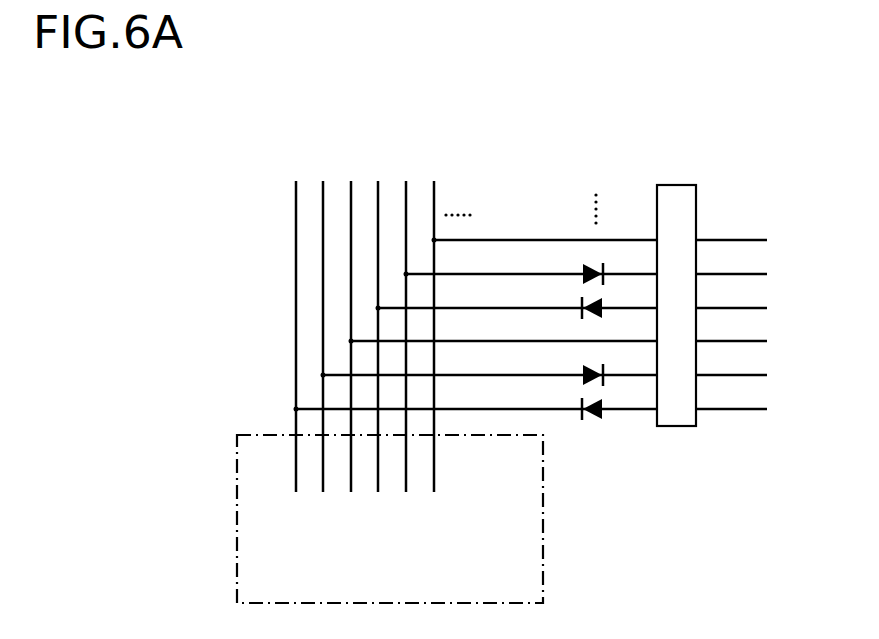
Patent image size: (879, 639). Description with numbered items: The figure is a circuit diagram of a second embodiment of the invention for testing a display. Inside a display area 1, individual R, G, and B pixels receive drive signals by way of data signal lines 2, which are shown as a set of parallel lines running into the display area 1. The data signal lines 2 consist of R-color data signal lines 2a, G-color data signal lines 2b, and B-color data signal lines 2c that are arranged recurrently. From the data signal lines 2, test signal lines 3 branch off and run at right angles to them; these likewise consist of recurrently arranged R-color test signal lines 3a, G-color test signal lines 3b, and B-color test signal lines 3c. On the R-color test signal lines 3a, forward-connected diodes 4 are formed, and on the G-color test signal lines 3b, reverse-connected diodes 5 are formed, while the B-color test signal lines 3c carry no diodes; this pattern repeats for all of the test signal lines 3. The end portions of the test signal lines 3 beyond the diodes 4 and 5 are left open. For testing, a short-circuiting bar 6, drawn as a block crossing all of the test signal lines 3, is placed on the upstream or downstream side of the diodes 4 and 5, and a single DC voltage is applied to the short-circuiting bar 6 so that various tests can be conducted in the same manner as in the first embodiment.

The display area 1 is at (245, 545).
The data signal lines 2 is at (339, 301).
The R-color data signal lines 2a is at (297, 392).
The G-color data signal lines 2b is at (323, 353).
The B-color data signal lines 2c is at (352, 320).
The test signal lines 3 is at (564, 360).
The R-color test signal lines 3a is at (531, 453).
The G-color test signal lines 3b is at (727, 377).
The B-color test signal lines 3c is at (747, 345).
The forward-connected diodes 4 is at (600, 413).
The reverse-connected diodes 5 is at (577, 378).
The short-circuiting bar 6 is at (672, 195).